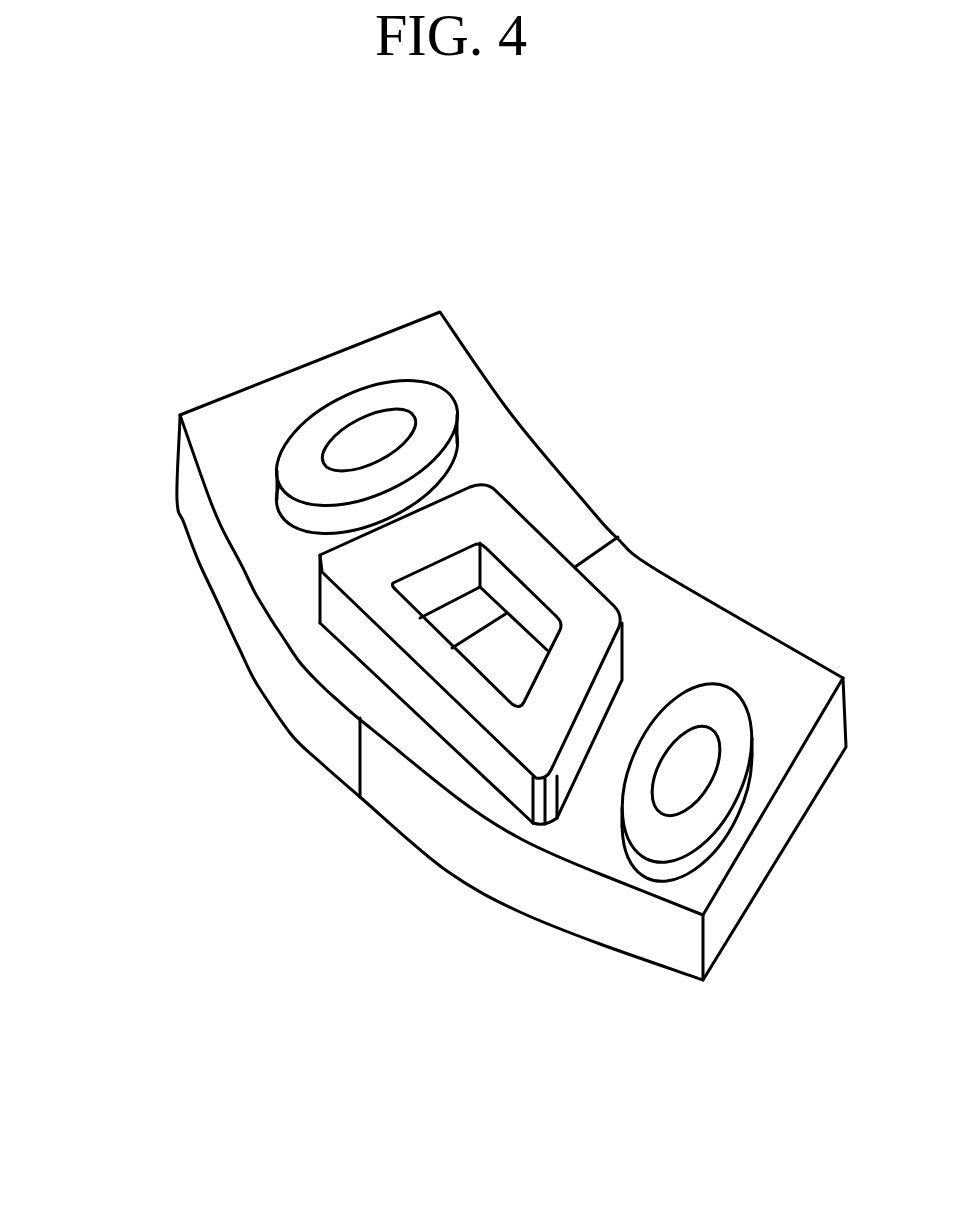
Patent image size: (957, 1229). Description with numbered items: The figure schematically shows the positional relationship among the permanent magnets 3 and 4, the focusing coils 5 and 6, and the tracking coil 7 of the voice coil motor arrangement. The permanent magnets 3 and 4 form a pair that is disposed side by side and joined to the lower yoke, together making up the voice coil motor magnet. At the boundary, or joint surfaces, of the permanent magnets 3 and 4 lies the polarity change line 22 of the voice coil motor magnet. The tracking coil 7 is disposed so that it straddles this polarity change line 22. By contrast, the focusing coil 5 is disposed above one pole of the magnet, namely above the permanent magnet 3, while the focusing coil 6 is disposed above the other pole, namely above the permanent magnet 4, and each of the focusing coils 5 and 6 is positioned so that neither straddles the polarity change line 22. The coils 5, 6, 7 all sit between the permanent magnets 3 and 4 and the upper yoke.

The permanent magnet 3 is at (213, 562).
The permanent magnet 4 is at (550, 883).
The focusing coil 5 is at (413, 393).
The focusing coil 6 is at (703, 710).
The tracking coil 7 is at (417, 645).
The polarity change line 22 is at (598, 545).